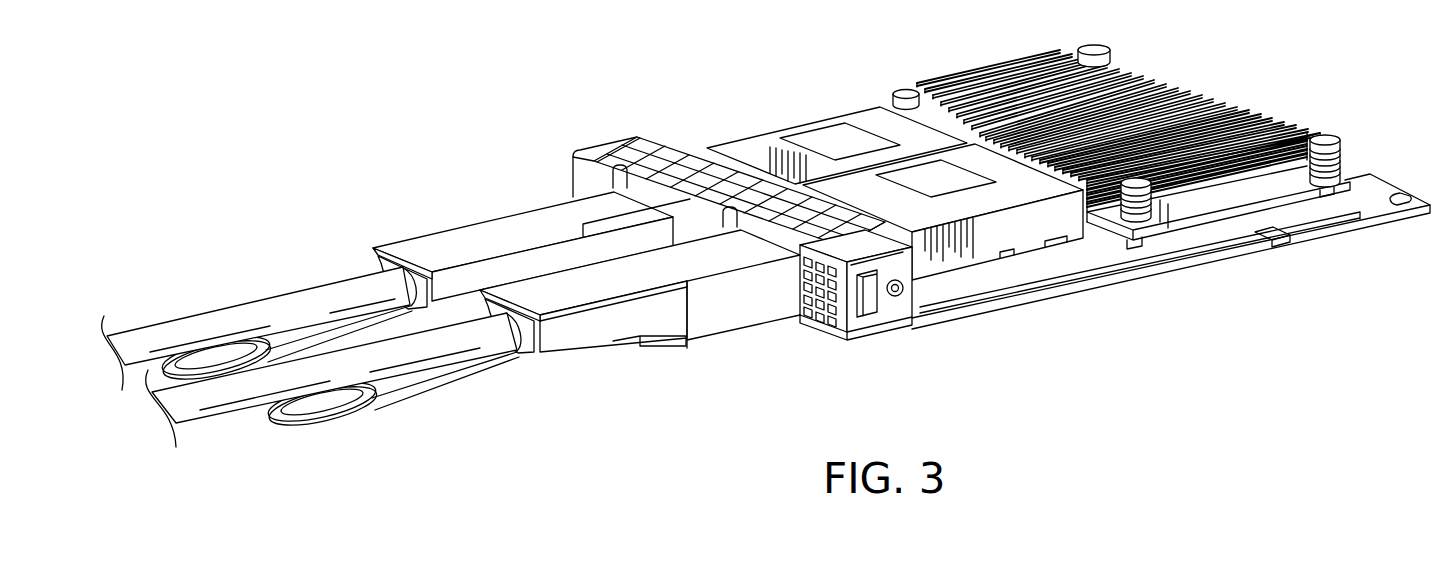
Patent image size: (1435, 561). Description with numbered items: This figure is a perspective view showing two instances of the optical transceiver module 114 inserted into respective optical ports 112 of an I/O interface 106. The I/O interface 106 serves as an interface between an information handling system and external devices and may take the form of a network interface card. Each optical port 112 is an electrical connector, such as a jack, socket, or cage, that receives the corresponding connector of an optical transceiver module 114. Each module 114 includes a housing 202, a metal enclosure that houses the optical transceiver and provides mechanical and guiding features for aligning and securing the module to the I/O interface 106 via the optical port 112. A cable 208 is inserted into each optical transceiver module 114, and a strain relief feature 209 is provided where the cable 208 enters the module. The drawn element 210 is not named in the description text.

The I/O interface 106 is at (1378, 178).
The optical port 112 is at (811, 124).
The optical transceiver module 114 is at (451, 273).
The housing 202 is at (735, 302).
The cable 208 is at (177, 322).
The strain relief feature 209 is at (377, 270).
The pull tab 210 is at (272, 340).